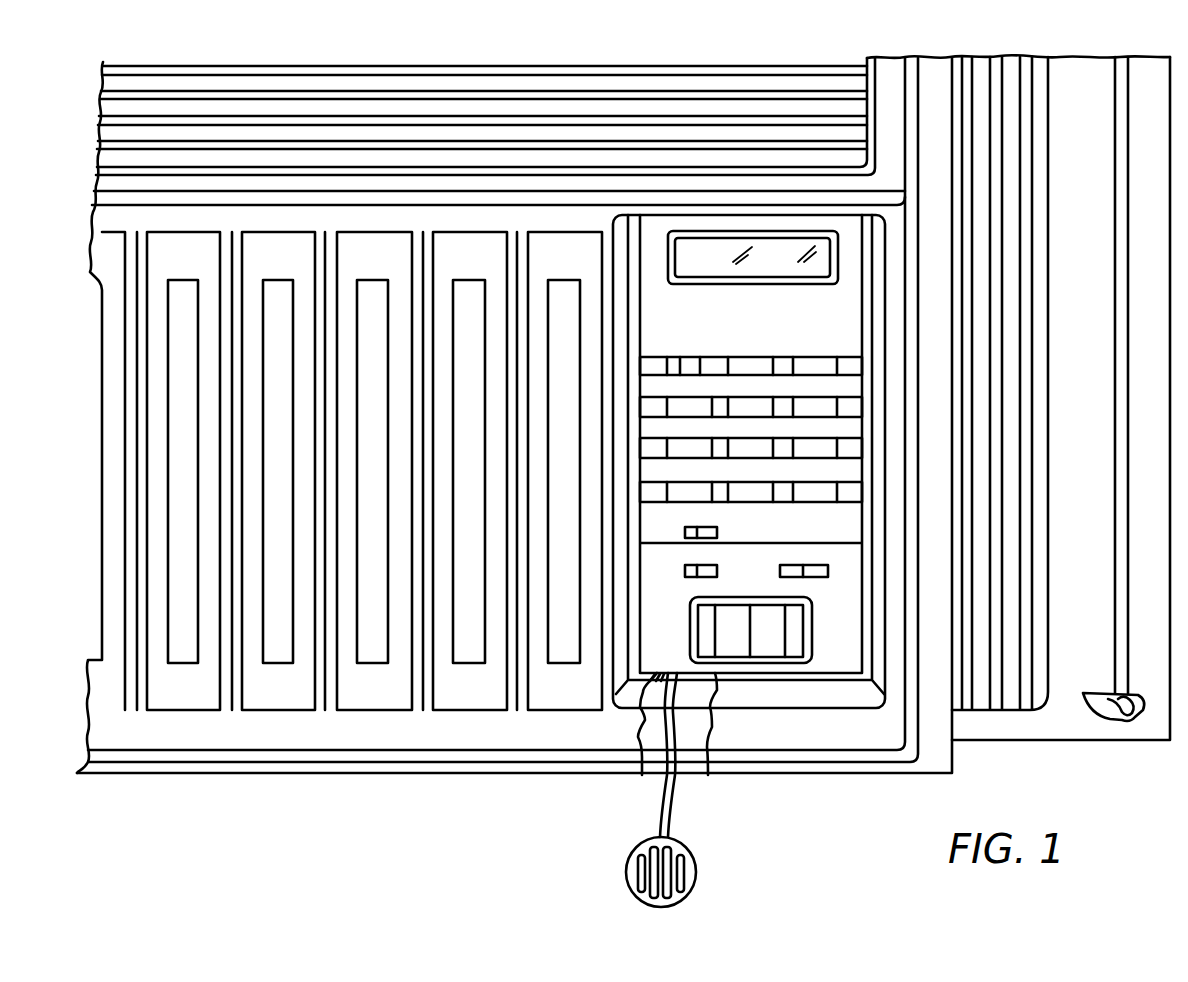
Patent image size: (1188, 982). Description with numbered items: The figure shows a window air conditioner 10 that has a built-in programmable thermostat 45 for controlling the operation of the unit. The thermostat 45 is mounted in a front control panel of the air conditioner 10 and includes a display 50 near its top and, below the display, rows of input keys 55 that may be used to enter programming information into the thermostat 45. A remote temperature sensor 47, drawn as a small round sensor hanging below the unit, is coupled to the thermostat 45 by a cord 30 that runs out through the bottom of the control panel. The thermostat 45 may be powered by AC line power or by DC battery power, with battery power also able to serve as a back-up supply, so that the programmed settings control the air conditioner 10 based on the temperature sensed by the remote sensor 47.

The window air conditioner 10 is at (323, 78).
The cord 30 is at (667, 722).
The built-in programmable thermostat 45 is at (660, 300).
The remote temperature sensor 47 is at (698, 868).
The display 50 is at (822, 287).
The input keys 55 is at (850, 365).